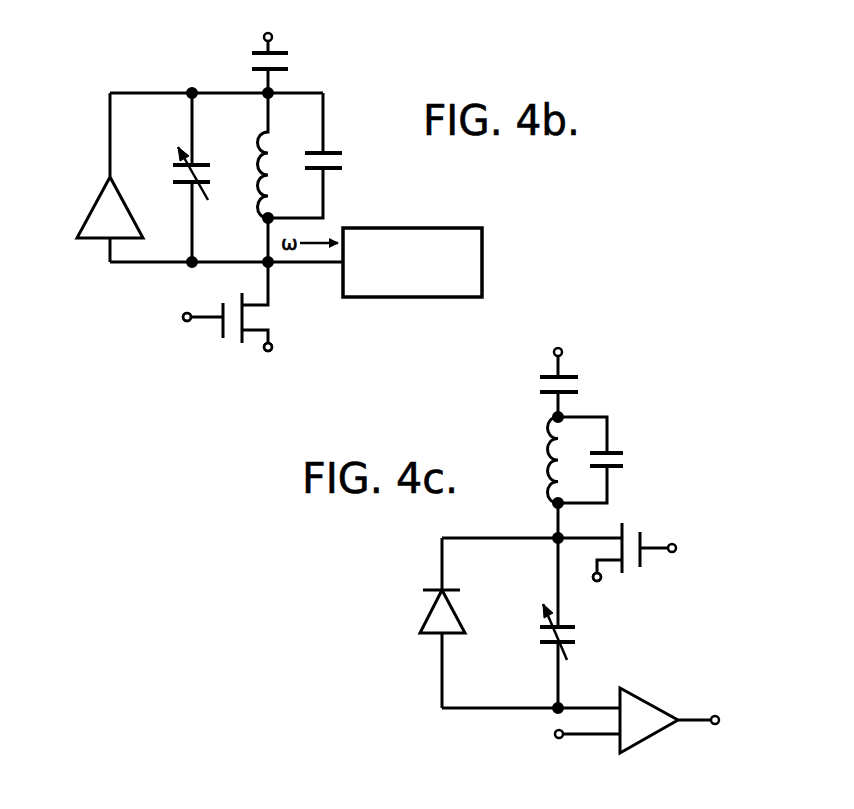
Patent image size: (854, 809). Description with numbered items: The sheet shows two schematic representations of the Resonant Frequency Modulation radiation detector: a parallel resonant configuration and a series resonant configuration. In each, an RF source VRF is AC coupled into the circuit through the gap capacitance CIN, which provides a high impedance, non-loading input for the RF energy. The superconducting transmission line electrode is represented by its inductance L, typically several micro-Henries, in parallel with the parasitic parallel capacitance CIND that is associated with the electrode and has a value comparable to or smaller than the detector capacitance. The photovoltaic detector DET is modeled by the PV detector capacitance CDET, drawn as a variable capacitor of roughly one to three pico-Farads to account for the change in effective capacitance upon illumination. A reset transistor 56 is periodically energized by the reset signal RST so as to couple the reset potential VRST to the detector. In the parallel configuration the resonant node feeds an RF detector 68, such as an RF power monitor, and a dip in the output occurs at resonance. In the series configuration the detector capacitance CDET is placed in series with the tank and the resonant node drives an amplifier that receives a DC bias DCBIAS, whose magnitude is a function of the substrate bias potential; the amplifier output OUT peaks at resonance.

In FIG. 4b, the reset transistor 56 is at (250, 309).
In FIG. 4c, the reset transistor 56 is at (588, 535).
In FIG. 4b, the RF detector 68 is at (482, 240).
In FIG. 4b, the transmission line electrode inductance L is at (252, 177).
In FIG. 4c, the transmission line electrode inductance L is at (542, 477).
In FIG. 4b, the gap capacitance CIN is at (292, 66).
In FIG. 4c, the gap capacitance CIN is at (581, 394).
In FIG. 4b, the parasitic parallel capacitance CIND is at (330, 155).
In FIG. 4c, the parasitic parallel capacitance CIND is at (619, 460).
In FIG. 4b, the PV detector capacitance CDET is at (165, 177).
In FIG. 4c, the PV detector capacitance CDET is at (589, 623).
In FIG. 4b, the PV detector DET is at (94, 177).
In FIG. 4c, the PV detector DET is at (415, 623).
In FIG. 4b, the RF source VRF is at (276, 26).
In FIG. 4c, the RF source VRF is at (563, 340).
In FIG. 4b, the reset potential VRST is at (261, 363).
In FIG. 4c, the reset potential VRST is at (625, 599).
In FIG. 4b, the reset signal RST is at (148, 317).
In FIG. 4c, the amplifier output OUT is at (698, 720).
In FIG. 4c, the DC bias DCBIAS is at (542, 739).